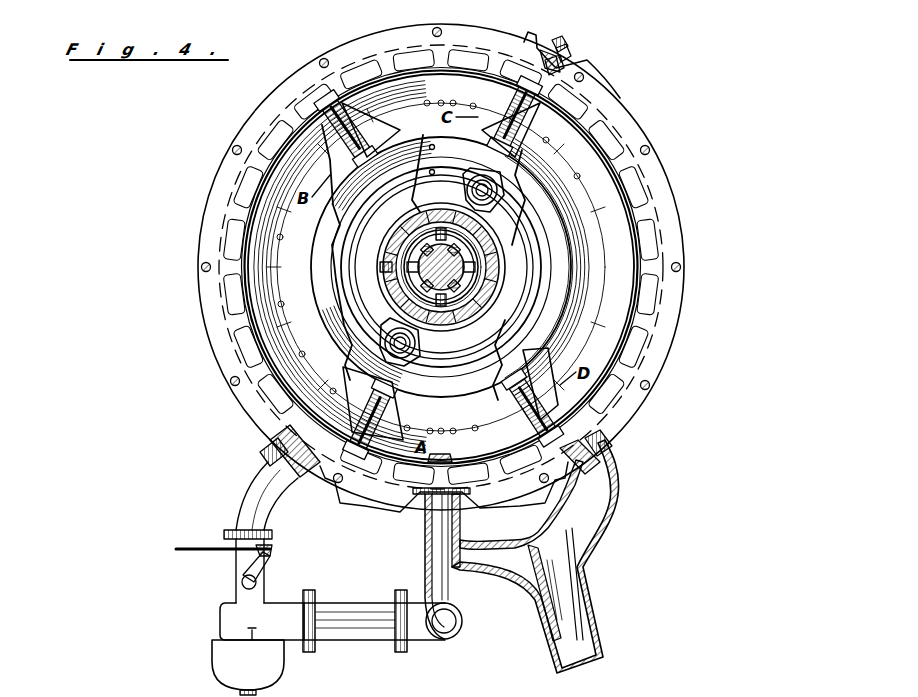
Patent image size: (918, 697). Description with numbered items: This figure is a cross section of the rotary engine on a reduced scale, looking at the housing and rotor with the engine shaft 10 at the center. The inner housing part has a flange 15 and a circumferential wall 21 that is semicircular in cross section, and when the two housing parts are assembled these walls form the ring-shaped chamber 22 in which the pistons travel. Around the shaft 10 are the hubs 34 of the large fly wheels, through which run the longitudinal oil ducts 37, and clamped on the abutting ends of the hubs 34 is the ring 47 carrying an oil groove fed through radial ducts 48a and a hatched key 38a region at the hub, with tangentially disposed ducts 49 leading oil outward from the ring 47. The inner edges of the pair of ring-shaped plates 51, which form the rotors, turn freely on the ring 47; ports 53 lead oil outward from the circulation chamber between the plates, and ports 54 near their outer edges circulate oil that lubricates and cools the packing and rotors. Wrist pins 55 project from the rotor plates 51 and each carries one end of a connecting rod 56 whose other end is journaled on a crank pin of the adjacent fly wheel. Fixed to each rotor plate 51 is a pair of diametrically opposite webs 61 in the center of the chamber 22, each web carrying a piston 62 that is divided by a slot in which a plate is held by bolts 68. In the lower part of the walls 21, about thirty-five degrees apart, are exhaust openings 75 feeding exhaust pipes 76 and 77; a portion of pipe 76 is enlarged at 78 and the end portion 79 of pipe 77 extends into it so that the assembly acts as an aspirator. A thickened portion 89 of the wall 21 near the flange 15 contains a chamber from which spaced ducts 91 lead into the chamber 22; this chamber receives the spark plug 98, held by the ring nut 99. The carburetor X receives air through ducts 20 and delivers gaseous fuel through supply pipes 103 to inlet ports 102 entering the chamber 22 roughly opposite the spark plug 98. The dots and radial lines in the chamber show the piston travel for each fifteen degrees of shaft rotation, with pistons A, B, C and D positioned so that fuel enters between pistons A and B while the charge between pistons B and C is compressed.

The shaft 10 is at (476, 250).
The flange 15 is at (567, 43).
The ducts 20 is at (346, 612).
The circumferential walls 21 is at (618, 185).
The ring-shaped chamber 22 is at (640, 238).
The hubs 34 is at (478, 290).
The oil ducts 37 is at (470, 238).
The key 38a is at (444, 222).
The ring 47 is at (392, 293).
The key 48a is at (384, 280).
The tangentially disposed ducts 49 is at (392, 232).
The ring-shaped plates 51 is at (574, 176).
The ports 53 is at (430, 174).
The ports 54 is at (430, 149).
The wrist pins 55 is at (497, 190).
The connecting rod 56 is at (466, 172).
The webs 61 is at (392, 126).
The piston 62 is at (344, 132).
The bolts 68 is at (373, 440).
The openings 75 is at (566, 452).
The exhaust pipe 76 is at (457, 570).
The exhaust pipe 77 is at (613, 500).
The enlarged portion 78 is at (546, 660).
The portion of exhaust pipe 79 is at (566, 602).
The thickened portion 89 is at (582, 70).
The ducts 91 is at (551, 140).
The spark plug 98 is at (566, 50).
The ring nut 99 is at (550, 62).
The gaseous fuel inlet ports 102 is at (288, 443).
The gaseous fuel supply pipes 103 is at (258, 494).
The carburetor X is at (218, 660).